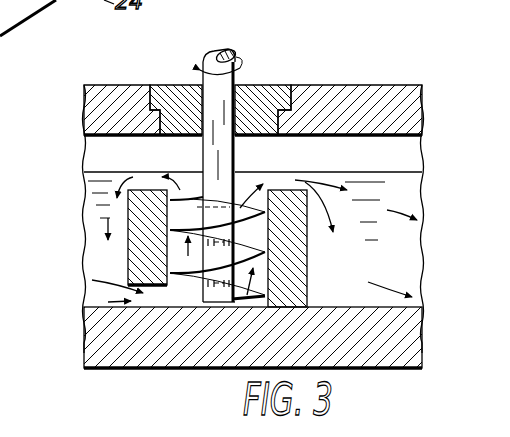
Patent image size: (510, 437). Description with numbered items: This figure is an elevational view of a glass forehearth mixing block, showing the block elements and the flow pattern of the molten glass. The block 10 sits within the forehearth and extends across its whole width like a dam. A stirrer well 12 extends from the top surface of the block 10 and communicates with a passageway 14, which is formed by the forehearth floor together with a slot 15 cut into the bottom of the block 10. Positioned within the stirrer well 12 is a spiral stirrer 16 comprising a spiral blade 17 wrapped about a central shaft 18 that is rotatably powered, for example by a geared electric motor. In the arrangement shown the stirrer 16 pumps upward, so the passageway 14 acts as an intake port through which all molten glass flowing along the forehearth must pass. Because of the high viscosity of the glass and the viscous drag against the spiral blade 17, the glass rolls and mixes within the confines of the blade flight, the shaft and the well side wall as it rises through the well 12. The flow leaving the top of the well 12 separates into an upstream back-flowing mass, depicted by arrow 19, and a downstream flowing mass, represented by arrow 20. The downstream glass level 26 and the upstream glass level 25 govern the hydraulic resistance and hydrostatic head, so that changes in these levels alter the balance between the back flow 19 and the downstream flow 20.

The block 10 is at (311, 286).
The stirrer well 12 is at (270, 180).
The passageway 14 is at (151, 291).
The slot 15 is at (156, 287).
The spiral stirrer 16 is at (194, 189).
The spiral blade 17 is at (240, 205).
The central shaft 18 is at (205, 53).
The arrow (upstream back flow) 19 is at (178, 186).
The arrow (downstream flow) 20 is at (322, 176).
The upstream glass level 25 is at (100, 170).
The glass level 26 is at (398, 172).